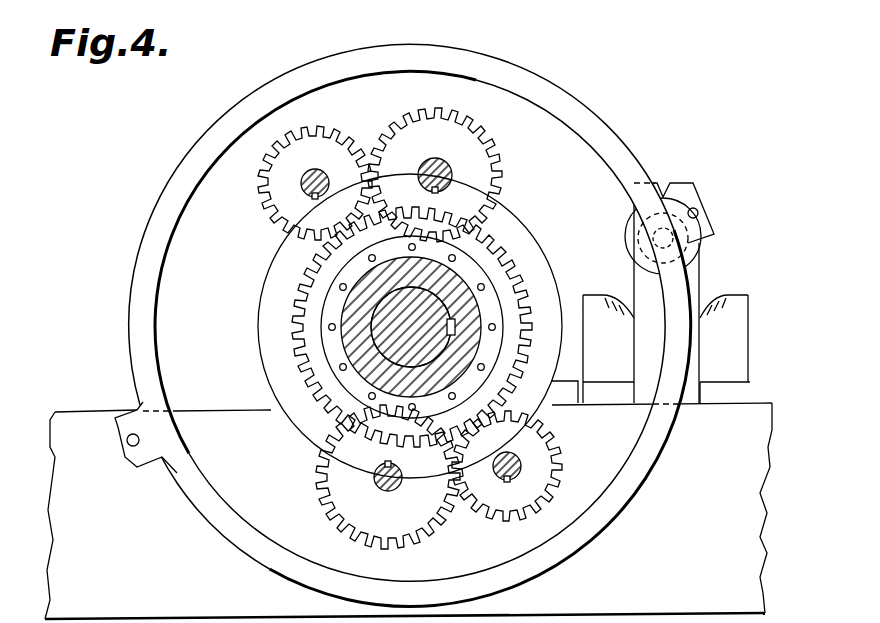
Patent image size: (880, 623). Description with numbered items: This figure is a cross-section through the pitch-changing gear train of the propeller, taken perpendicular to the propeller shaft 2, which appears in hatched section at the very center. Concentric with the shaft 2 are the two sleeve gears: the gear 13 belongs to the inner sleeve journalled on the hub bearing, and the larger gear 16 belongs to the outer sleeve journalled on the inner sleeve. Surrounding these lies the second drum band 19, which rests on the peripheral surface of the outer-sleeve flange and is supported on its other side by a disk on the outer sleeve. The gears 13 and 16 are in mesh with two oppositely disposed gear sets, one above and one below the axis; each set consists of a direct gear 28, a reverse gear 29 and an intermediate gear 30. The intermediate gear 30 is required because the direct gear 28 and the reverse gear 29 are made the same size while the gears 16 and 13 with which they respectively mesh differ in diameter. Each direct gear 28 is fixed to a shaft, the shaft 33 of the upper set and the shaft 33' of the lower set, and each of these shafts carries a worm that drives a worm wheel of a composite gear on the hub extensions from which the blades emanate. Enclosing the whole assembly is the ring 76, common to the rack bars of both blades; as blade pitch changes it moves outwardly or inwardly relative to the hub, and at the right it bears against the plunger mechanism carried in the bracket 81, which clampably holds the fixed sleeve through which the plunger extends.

The propeller shaft 2 is at (447, 308).
The gear 13 is at (480, 266).
The gear 16 is at (293, 318).
The second drum band 19 is at (265, 278).
The direct gear 28 is at (331, 136).
The reverse gear 29 is at (489, 158).
The intermediate gear 30 is at (425, 113).
The shaft 33 is at (267, 192).
The shaft 33' is at (334, 481).
The ring 76 is at (140, 360).
The bracket 81 is at (634, 288).